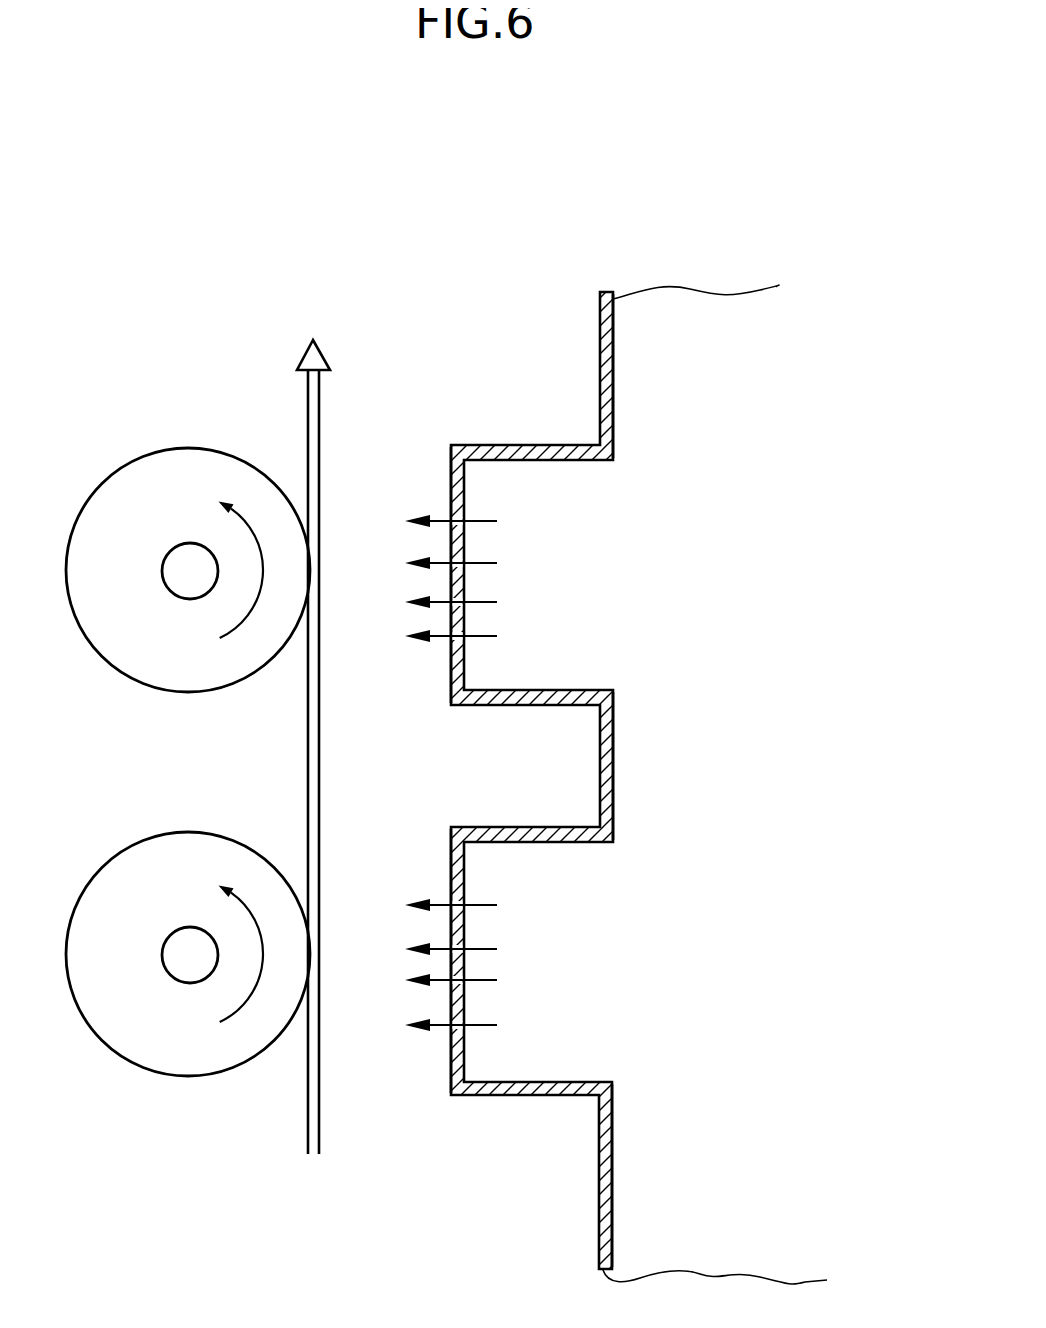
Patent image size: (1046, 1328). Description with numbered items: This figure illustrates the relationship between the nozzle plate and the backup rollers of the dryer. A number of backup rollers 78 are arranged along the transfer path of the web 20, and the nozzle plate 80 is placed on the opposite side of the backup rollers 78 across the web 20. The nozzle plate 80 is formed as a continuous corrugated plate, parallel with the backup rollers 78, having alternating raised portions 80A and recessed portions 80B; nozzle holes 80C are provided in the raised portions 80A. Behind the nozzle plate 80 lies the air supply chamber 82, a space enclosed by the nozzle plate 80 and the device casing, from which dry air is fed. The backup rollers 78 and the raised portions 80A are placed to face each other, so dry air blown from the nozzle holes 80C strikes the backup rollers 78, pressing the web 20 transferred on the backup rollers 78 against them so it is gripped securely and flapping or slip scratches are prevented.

The web 20 is at (320, 427).
The backup rollers 78 is at (157, 482).
The nozzle plate 80 is at (576, 784).
The raised portions 80A is at (450, 672).
The recessed portions 80B is at (615, 412).
The nozzle holes 80C is at (456, 557).
The air supply chamber 82 is at (828, 559).